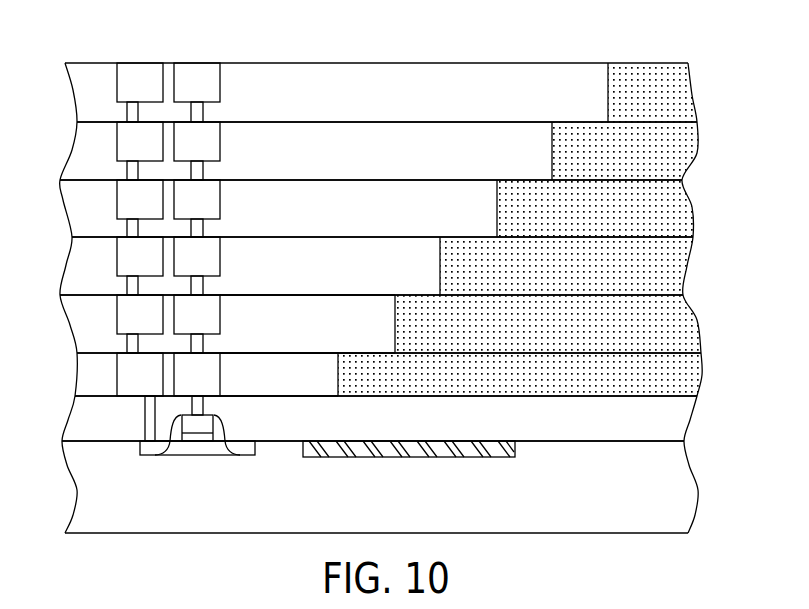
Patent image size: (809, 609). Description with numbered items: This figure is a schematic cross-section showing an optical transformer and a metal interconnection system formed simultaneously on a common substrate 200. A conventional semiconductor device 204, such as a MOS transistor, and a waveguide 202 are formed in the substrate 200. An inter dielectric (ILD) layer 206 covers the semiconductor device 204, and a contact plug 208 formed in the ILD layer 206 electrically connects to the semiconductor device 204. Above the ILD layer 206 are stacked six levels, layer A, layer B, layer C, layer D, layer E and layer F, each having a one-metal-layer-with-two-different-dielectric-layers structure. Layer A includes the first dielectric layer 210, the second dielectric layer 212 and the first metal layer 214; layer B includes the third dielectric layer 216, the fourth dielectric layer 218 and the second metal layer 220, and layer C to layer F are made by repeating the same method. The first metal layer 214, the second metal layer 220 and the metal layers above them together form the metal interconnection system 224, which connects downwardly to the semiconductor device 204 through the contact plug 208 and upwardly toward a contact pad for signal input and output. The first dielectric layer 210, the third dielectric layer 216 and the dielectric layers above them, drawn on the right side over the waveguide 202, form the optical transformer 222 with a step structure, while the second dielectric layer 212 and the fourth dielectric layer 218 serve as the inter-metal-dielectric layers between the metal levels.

The substrate 200 is at (647, 503).
The waveguide 202 is at (515, 451).
The semiconductor device 204 is at (172, 458).
The inter dielectric (ILD) layer 206 is at (123, 433).
The contact plug 208 is at (145, 405).
The first dielectric layer 210 is at (524, 390).
The second dielectric layer 212 is at (316, 390).
The first metal layer 214 is at (117, 373).
The third dielectric layer 216 is at (524, 334).
The fourth dielectric layer 218 is at (316, 334).
The second metal layer 220 is at (117, 316).
The optical transformer 222 is at (654, 61).
The metal interconnection system 224 is at (128, 62).
The layer A is at (705, 375).
The layer B is at (699, 320).
The layer C is at (699, 266).
The layer D is at (699, 207).
The layer E is at (699, 153).
The layer F is at (699, 95).